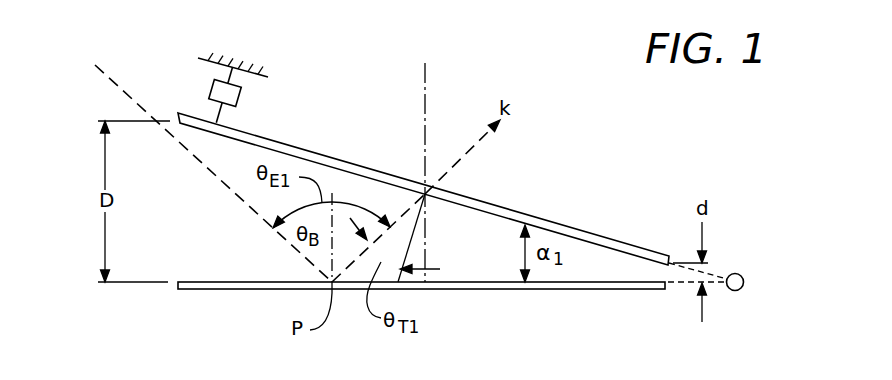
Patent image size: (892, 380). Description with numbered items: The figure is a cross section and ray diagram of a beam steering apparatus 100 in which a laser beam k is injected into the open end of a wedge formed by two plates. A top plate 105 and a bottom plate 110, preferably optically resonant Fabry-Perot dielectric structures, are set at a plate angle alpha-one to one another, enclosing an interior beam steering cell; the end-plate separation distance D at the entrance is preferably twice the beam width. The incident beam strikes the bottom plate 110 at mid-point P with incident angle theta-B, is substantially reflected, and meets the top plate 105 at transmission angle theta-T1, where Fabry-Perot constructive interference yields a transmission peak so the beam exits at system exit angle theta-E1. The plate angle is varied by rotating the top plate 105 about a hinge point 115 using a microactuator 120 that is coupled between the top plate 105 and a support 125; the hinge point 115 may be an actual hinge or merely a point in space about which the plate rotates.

The beam steering apparatus 100 is at (605, 135).
The top plate 105 is at (324, 156).
The bottom plate 110 is at (233, 291).
The hinge point 115 is at (734, 273).
The microactuator 120 is at (240, 100).
The support 125 is at (237, 57).